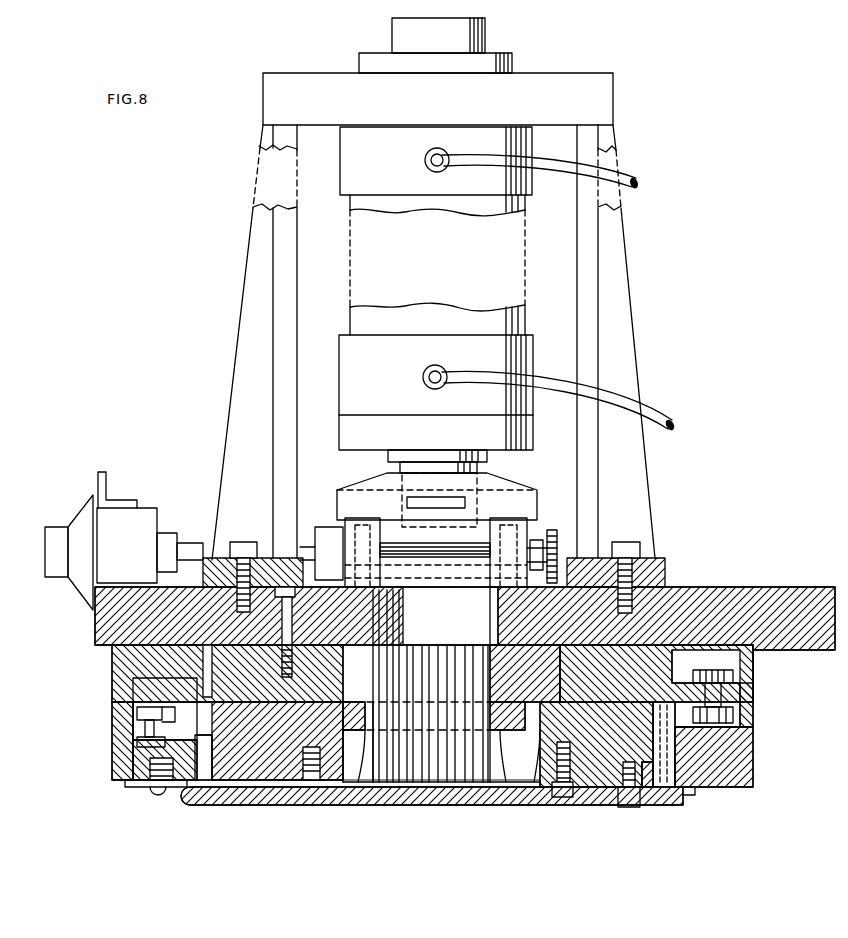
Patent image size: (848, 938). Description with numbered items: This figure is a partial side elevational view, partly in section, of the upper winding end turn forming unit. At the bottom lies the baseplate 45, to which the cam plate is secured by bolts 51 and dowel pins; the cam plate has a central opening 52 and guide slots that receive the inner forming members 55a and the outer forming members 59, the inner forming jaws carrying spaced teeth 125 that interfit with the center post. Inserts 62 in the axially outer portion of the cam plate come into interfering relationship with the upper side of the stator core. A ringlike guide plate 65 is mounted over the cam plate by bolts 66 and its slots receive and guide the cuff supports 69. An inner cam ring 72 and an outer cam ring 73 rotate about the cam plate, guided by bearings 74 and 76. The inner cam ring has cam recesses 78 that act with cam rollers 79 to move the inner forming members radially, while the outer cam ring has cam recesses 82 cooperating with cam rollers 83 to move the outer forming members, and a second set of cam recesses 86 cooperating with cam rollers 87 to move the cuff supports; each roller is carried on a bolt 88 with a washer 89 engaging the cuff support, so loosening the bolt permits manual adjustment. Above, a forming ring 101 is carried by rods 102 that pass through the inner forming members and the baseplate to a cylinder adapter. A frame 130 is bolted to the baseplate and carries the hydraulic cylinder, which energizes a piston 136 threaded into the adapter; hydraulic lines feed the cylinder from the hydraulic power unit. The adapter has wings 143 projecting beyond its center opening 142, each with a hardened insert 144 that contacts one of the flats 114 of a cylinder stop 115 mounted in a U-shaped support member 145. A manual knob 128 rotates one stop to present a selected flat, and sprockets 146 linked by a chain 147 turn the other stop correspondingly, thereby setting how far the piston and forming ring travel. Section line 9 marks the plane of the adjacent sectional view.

The section line 9- 9 is at (203, 463).
The baseplate 45 is at (760, 590).
The bolts 51 is at (292, 617).
The central opening 52 is at (530, 775).
The inner forming members 55a is at (640, 690).
The outer forming members 59 is at (265, 760).
The inserts 62 is at (548, 787).
The guide plate 65 is at (650, 770).
The bolts 66 is at (628, 770).
The cuff supports 69 is at (310, 770).
The inner cam ring 72 is at (745, 694).
The outer cam ring 73 is at (753, 762).
The bearing 74 is at (112, 655).
The bearing 76 is at (690, 788).
The cam recesses 78 is at (740, 713).
The cam rollers 79 is at (735, 680).
The cam recesses 82 is at (135, 729).
The cam rollers 83 is at (140, 745).
The cam recesses 86 is at (190, 800).
The cam rollers 87 is at (133, 763).
The bolt 88 is at (160, 795).
The washer 89 is at (150, 787).
The forming ring 101 is at (355, 710).
The rods 102 is at (520, 677).
The flats 114 is at (400, 545).
The cylinder stop 115 is at (323, 530).
The teeth 125 is at (475, 775).
The manual adjustment knob 128 is at (50, 577).
The frame 130 is at (620, 330).
The piston 136 is at (478, 468).
The center opening 142 is at (480, 629).
The wings 143 is at (490, 497).
The hardened metal insert 144 is at (430, 504).
The U-shaped support member 145 is at (538, 543).
The sprocket 146 is at (507, 593).
The chain 147 is at (560, 538).